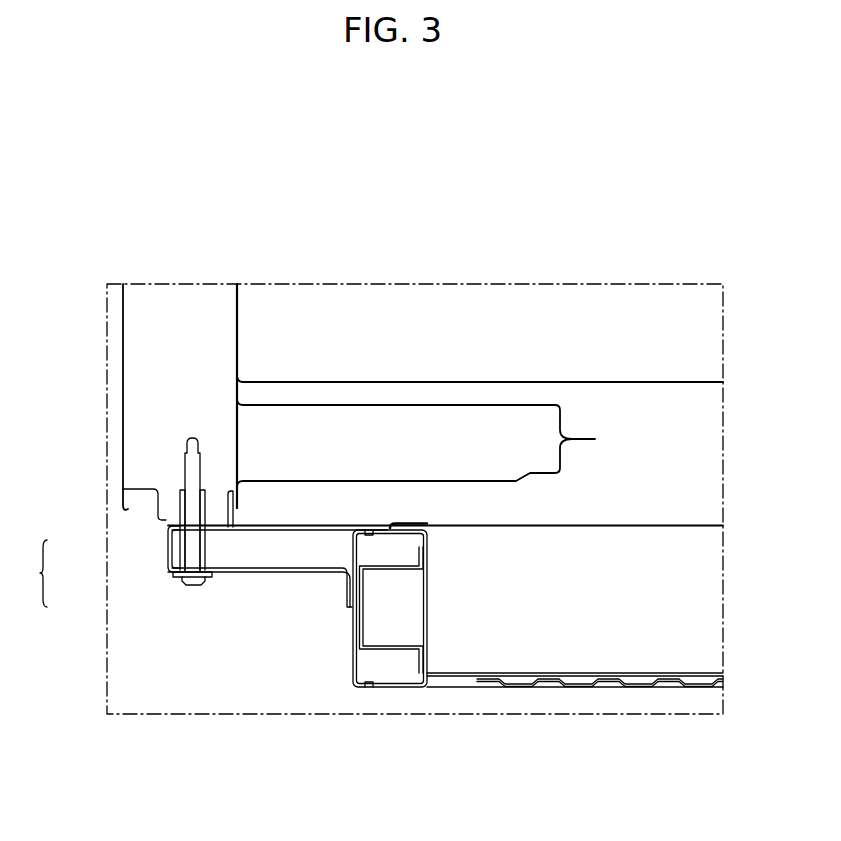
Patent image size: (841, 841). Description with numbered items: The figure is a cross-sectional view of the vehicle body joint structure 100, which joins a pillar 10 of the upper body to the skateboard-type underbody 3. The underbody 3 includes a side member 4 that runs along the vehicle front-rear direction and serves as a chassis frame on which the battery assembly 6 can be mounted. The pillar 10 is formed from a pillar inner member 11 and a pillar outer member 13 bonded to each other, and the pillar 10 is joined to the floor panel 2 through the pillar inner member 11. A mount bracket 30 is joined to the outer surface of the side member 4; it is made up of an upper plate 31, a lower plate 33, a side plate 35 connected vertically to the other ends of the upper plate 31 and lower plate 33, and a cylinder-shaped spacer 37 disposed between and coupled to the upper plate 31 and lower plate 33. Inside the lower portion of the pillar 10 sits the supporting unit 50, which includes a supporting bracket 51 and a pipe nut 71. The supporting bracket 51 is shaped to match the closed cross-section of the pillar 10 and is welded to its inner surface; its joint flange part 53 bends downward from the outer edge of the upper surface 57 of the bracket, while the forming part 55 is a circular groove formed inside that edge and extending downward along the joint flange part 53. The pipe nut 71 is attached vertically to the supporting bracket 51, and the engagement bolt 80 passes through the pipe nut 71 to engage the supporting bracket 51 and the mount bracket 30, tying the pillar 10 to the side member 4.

The vehicle body joint structure 100 is at (490, 155).
The pillar 10 is at (250, 313).
The pillar inner member 11 is at (239, 332).
The pillar outer member 13 is at (122, 335).
The floor panel 2 is at (596, 381).
The forming part 55 is at (163, 501).
The upper surface of the bracket 57 is at (132, 480).
The joint flange part 53 is at (123, 513).
The supporting unit 50 is at (112, 548).
The supporting bracket 51 is at (145, 520).
The pipe nut 71 is at (172, 517).
The side plate 35 is at (172, 562).
The spacer 37 is at (183, 564).
The engagement bolt 80 is at (199, 602).
The mount bracket 30 is at (392, 664).
The upper plate 31 is at (297, 531).
The lower plate 33 is at (331, 574).
The side member 4 is at (353, 660).
The underbody 3 is at (451, 694).
The battery assembly 6 is at (578, 653).